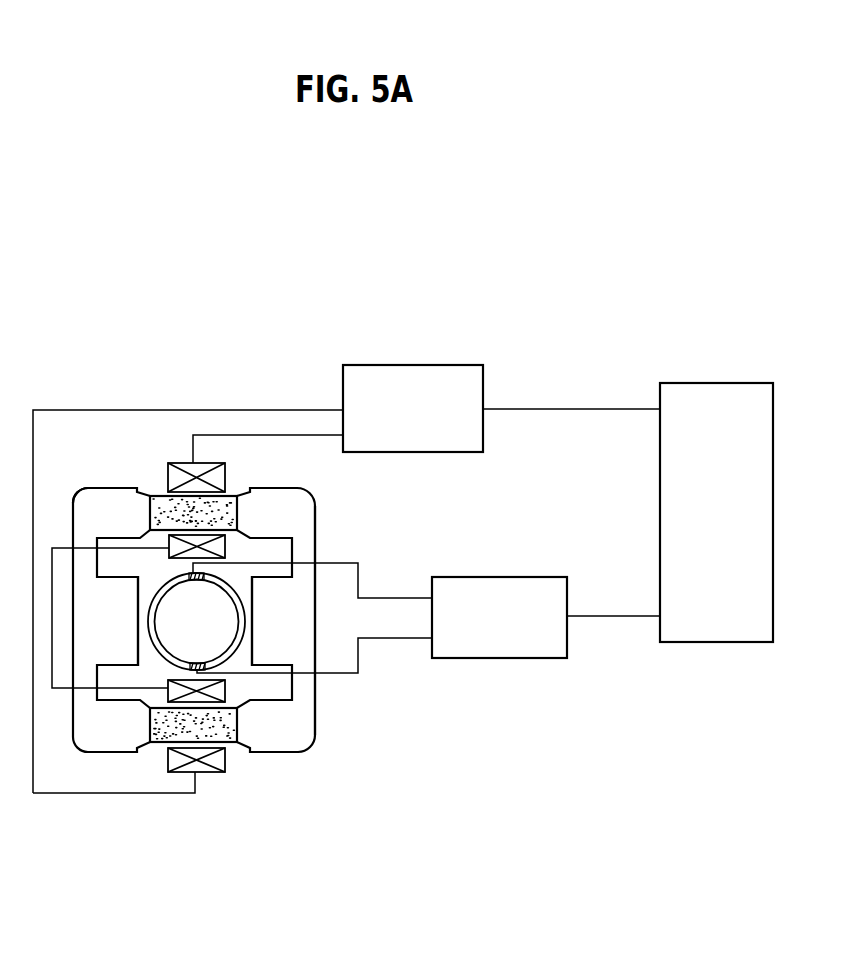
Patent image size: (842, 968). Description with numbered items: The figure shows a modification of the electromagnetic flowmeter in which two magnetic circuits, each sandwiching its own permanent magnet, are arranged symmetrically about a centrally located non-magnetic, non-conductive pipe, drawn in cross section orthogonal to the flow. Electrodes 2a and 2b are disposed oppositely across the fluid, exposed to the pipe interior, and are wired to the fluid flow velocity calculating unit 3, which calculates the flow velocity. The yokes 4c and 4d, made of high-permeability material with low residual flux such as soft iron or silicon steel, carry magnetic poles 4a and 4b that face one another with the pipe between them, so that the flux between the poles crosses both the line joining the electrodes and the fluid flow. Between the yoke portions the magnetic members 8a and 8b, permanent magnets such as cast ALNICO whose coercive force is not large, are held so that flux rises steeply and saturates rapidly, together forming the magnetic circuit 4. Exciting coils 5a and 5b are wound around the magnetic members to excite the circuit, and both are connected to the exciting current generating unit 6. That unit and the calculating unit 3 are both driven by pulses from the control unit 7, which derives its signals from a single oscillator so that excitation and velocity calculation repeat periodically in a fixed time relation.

The electrode 2a is at (193, 582).
The electrode 2b is at (197, 662).
The fluid flow velocity calculating unit 3 is at (490, 577).
The magnetic circuit 4 is at (213, 681).
The magnetic pole 4a is at (143, 663).
The magnetic pole 4b is at (250, 638).
The yoke 4c is at (97, 483).
The yoke 4d is at (315, 508).
The exciting coil 5a is at (225, 463).
The exciting coil 5b is at (222, 772).
The exciting current generating unit 6 is at (420, 365).
The control unit 7 is at (660, 488).
The magnetic member 8a is at (230, 502).
The magnetic member 8b is at (215, 722).